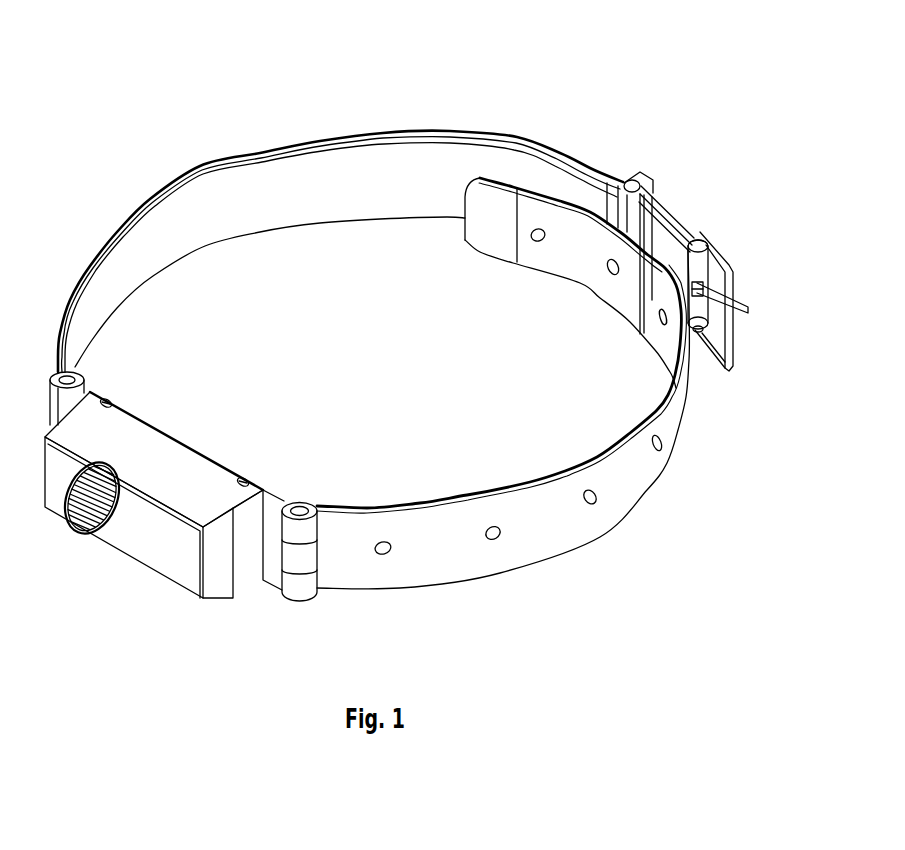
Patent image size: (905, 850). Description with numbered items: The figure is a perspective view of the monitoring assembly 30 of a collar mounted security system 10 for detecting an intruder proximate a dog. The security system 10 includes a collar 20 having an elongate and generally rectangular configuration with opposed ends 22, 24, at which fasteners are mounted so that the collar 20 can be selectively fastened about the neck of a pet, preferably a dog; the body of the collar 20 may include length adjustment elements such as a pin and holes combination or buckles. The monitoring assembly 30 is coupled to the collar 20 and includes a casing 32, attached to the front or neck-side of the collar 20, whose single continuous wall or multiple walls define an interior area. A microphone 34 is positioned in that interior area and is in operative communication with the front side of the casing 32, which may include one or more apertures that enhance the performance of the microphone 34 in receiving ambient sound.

The security system 10 is at (157, 84).
The collar 20 is at (269, 176).
The first end of collar 22 is at (476, 197).
The second end of collar 24 is at (691, 236).
The monitoring assembly 30 is at (220, 390).
The casing 32 is at (176, 548).
The microphone 34 is at (94, 512).